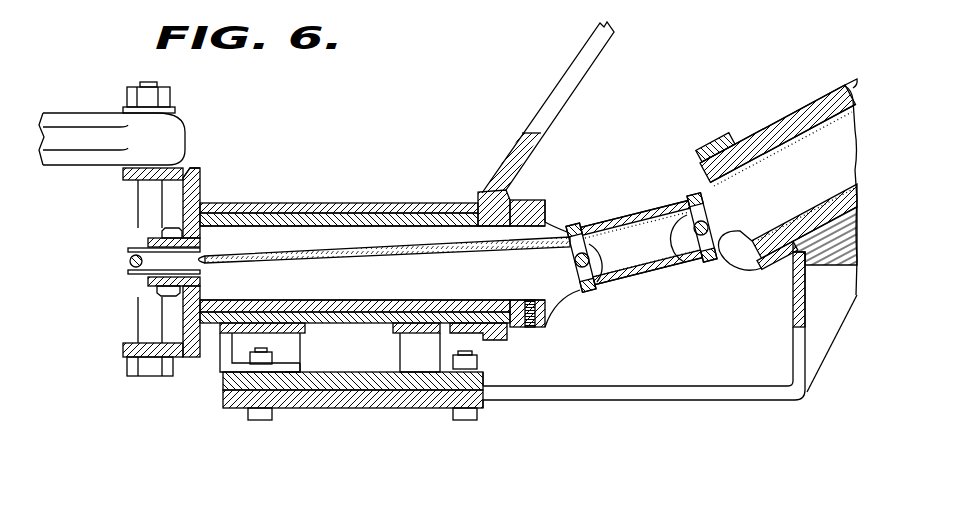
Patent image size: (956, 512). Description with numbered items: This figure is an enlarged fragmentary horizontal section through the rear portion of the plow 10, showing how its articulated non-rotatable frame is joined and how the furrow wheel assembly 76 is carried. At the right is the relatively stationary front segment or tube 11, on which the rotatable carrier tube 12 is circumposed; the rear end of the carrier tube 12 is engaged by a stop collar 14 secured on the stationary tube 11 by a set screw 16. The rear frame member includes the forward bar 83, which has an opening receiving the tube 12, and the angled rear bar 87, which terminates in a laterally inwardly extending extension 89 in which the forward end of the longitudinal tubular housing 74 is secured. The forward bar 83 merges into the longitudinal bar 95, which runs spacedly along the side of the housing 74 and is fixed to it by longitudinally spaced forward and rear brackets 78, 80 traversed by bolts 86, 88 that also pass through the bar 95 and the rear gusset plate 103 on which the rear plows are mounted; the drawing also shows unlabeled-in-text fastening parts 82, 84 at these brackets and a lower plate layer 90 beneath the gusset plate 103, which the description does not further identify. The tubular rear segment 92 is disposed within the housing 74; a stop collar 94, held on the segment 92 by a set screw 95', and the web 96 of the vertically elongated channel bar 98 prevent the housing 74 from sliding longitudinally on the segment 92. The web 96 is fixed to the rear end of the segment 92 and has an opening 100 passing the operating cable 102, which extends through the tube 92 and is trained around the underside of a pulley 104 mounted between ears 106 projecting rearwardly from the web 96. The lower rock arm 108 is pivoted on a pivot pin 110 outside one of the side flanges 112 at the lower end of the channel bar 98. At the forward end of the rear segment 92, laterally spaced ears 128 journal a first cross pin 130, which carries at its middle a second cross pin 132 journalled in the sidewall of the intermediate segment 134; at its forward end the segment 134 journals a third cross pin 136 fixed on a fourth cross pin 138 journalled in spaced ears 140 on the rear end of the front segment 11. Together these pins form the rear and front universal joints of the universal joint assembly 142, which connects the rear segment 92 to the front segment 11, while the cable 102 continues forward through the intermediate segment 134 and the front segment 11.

The plow 10 is at (765, 104).
The stationary tube 11 is at (853, 90).
The carrier tube 12 is at (757, 134).
The stop collar 14 is at (765, 260).
The set screw 16 is at (716, 147).
The tubular housing 74 is at (370, 207).
The furrow wheel assembly 76 is at (346, 183).
The forward bracket 78 is at (443, 343).
The rear bracket 80 is at (232, 339).
The nut 82 is at (483, 367).
The forward bar 83 is at (797, 333).
The bracket leg 84 is at (290, 366).
The bolt 86 is at (467, 421).
The rear bar 87 is at (560, 97).
The bolt 88 is at (263, 421).
The extension 89 is at (481, 195).
The housing plate 90 is at (370, 408).
The rear segment 92 is at (298, 217).
The stop collar 94 is at (533, 200).
The longitudinal bar 95 is at (644, 343).
The set screw 95' is at (545, 327).
The web 96 is at (198, 194).
The channel bar 98 is at (193, 167).
The opening 100 is at (203, 257).
The operating cable 102 is at (367, 256).
The rear gusset plate 103 is at (352, 382).
The pulley 104 is at (146, 269).
The ears 106 is at (150, 241).
The lower rock arm 108 is at (82, 119).
The pivot pin 110 is at (139, 200).
The side flanges 112 is at (125, 173).
The ears 128 is at (568, 285).
The first cross pin 130 is at (598, 292).
The second cross pin 132 is at (592, 248).
The intermediate segment 134 is at (622, 198).
The third cross pin 136 is at (699, 265).
The fourth cross pin 138 is at (693, 238).
The ears 140 is at (717, 245).
The universal joint assembly 142 is at (667, 290).